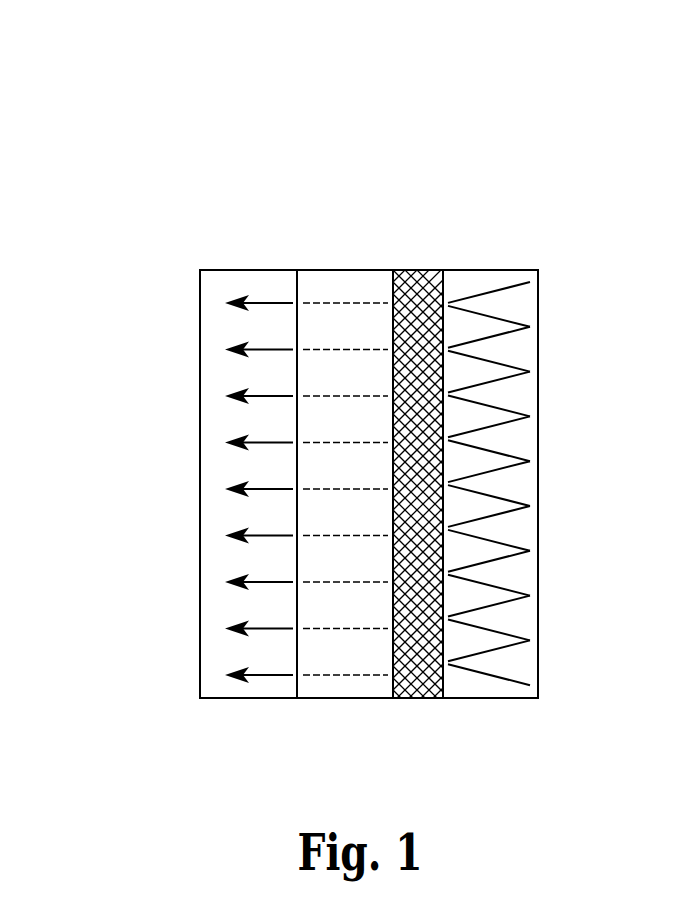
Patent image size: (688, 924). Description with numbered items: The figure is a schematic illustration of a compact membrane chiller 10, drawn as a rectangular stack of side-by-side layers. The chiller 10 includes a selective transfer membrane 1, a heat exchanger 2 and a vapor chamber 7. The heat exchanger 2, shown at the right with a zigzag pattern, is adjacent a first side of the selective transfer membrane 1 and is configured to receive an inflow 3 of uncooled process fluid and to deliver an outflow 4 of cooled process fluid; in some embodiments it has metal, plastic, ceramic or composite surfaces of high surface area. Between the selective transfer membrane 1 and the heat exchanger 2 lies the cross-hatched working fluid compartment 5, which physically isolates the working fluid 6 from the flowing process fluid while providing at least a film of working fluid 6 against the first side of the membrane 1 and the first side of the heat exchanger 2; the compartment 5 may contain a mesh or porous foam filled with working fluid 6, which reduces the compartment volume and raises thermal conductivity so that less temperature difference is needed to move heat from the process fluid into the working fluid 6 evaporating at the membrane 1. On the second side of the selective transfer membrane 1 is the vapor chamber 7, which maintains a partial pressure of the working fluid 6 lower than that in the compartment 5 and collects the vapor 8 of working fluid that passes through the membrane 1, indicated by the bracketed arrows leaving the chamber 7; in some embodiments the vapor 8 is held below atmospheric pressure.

The compact membrane chiller 10 is at (150, 92).
The vapor chamber 7 is at (249, 270).
The vapor 8 is at (190, 300).
The selective transfer membrane 1 is at (345, 270).
The working fluid compartment 5 is at (422, 270).
The working fluid 6 is at (423, 637).
The heat exchanger 2 is at (468, 270).
The outflow of cooled process fluid 4 is at (490, 258).
The inflow of uncooled process fluid 3 is at (490, 722).